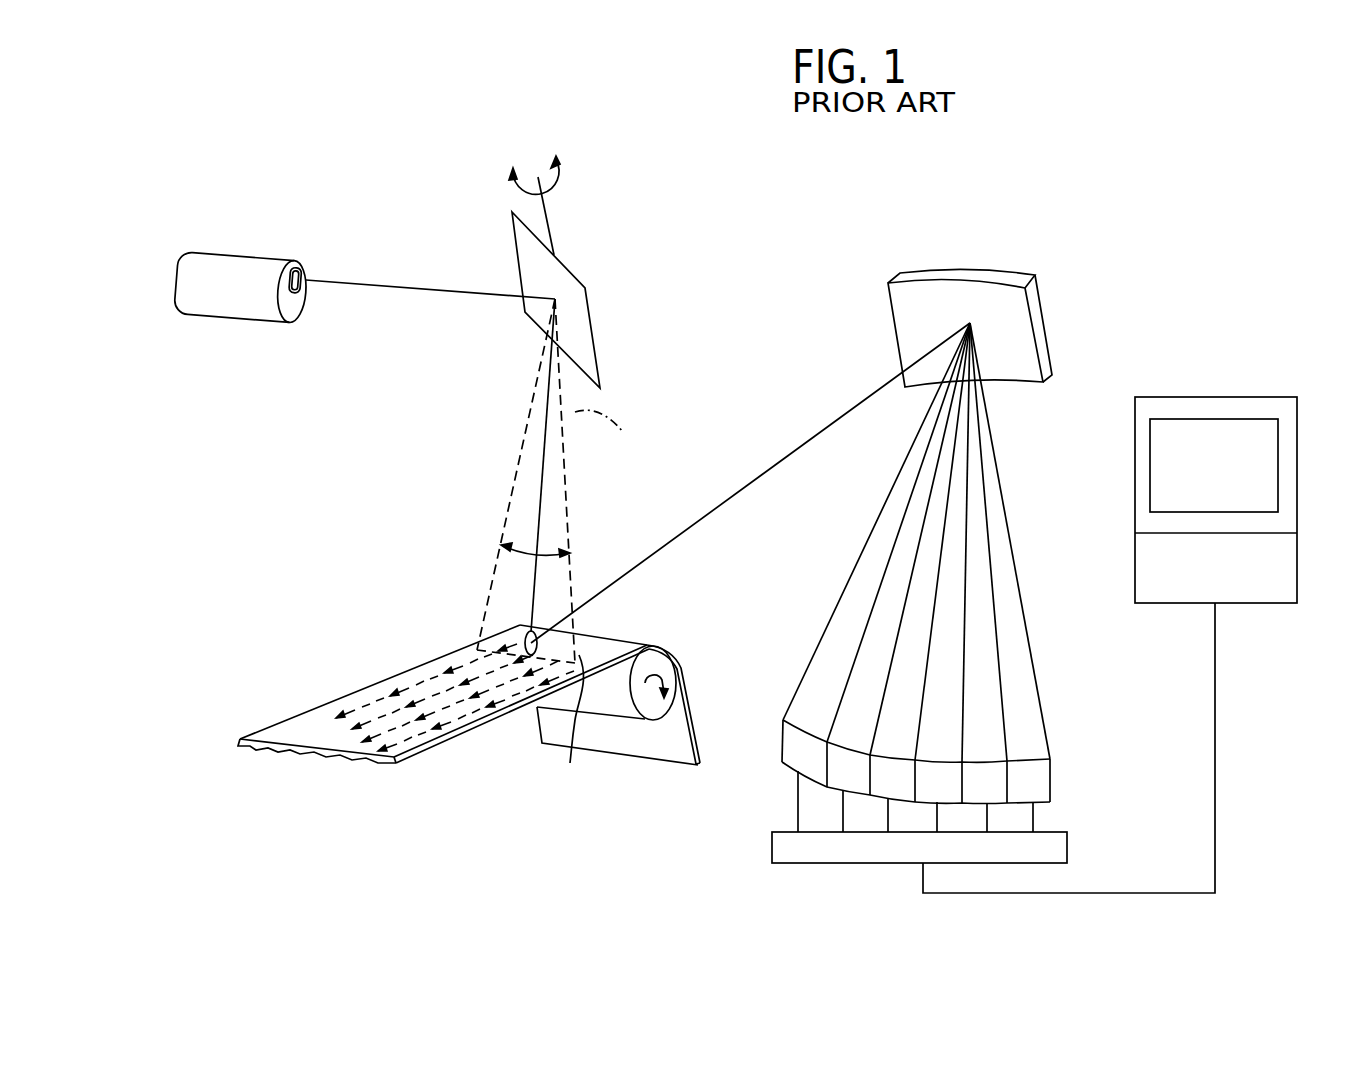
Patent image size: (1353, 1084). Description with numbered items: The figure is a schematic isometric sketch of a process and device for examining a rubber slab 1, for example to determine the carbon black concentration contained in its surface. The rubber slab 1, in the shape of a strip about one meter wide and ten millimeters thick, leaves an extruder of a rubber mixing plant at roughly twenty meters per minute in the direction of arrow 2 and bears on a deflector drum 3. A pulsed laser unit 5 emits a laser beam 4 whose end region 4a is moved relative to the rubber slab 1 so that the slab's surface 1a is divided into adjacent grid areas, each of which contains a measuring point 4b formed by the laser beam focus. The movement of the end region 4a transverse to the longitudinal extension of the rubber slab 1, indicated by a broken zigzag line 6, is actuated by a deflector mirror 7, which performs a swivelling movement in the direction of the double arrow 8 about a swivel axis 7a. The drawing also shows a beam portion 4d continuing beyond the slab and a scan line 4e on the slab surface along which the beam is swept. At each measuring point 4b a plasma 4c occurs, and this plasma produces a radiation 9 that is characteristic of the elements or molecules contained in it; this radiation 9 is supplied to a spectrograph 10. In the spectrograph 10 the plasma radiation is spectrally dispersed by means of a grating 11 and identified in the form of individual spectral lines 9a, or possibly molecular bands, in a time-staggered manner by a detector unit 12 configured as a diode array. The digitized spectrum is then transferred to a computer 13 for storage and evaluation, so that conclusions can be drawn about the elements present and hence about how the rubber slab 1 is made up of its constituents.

The rubber slab 1 is at (333, 765).
The surface of the rubber slab 1a is at (287, 733).
The arrow 2 is at (520, 723).
The deflector drum 3 is at (668, 672).
The laser beam 4 is at (383, 285).
The end region of the laser beam 4a is at (501, 481).
The measuring point 4b is at (555, 642).
The plasma 4c is at (528, 653).
The transmitted beam 4d is at (567, 728).
The scan line 4e is at (430, 657).
The pulsed laser unit 5 is at (220, 300).
The broken zigzag line 6 is at (373, 710).
The deflector mirror 7 is at (585, 338).
The swivel axis 7a is at (607, 442).
The double arrow 8 is at (560, 180).
The radiation 9 is at (767, 469).
The spectral lines 9a is at (963, 675).
The spectrograph 10 is at (1055, 443).
The grating 11 is at (1042, 327).
The detector unit 12 is at (840, 850).
The computer 13 is at (1247, 427).